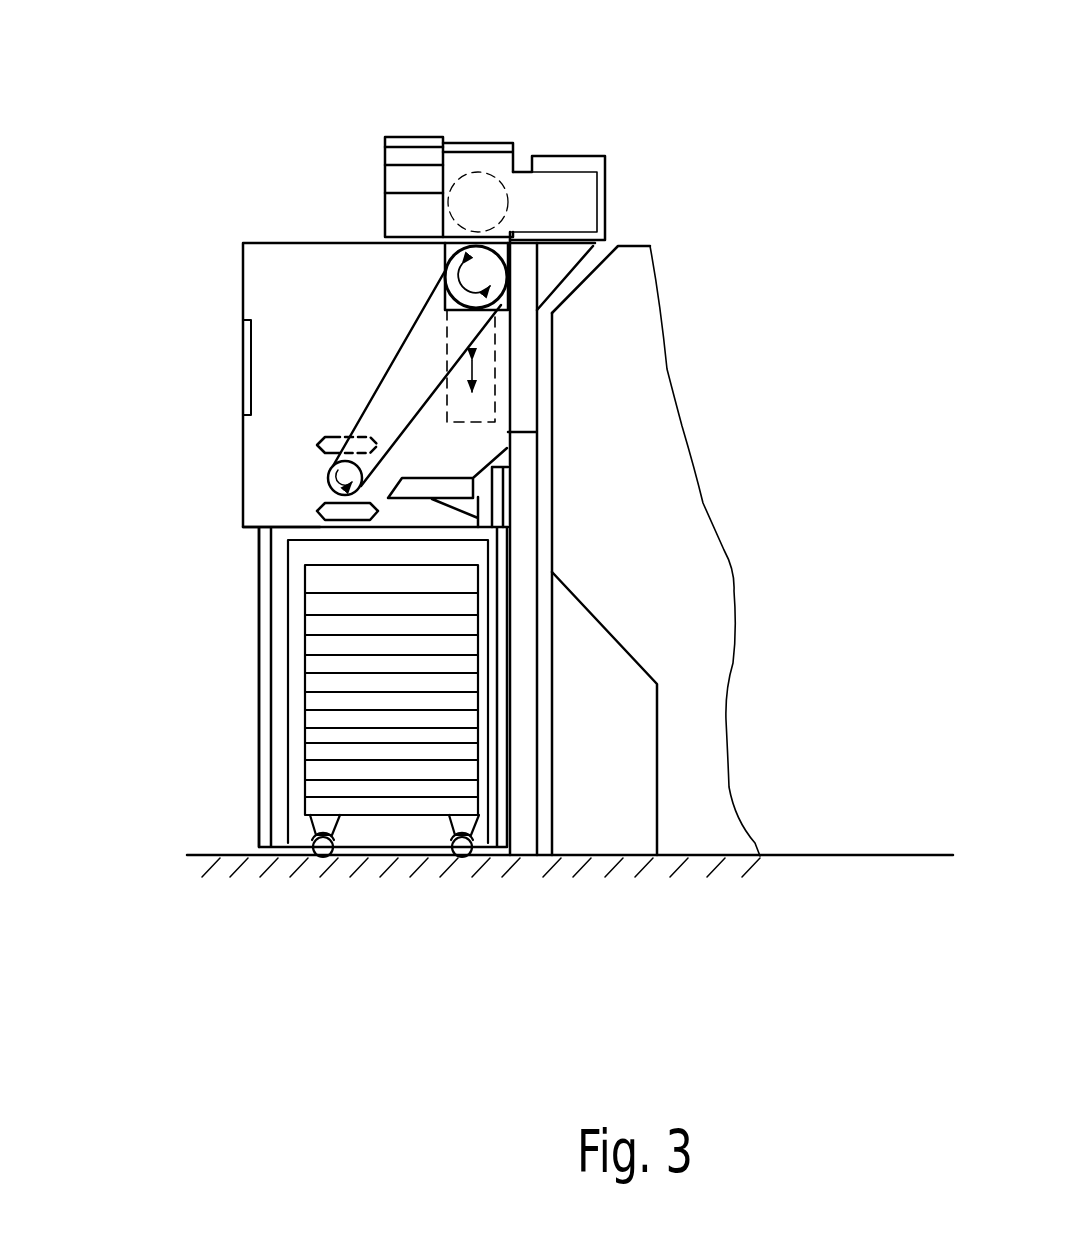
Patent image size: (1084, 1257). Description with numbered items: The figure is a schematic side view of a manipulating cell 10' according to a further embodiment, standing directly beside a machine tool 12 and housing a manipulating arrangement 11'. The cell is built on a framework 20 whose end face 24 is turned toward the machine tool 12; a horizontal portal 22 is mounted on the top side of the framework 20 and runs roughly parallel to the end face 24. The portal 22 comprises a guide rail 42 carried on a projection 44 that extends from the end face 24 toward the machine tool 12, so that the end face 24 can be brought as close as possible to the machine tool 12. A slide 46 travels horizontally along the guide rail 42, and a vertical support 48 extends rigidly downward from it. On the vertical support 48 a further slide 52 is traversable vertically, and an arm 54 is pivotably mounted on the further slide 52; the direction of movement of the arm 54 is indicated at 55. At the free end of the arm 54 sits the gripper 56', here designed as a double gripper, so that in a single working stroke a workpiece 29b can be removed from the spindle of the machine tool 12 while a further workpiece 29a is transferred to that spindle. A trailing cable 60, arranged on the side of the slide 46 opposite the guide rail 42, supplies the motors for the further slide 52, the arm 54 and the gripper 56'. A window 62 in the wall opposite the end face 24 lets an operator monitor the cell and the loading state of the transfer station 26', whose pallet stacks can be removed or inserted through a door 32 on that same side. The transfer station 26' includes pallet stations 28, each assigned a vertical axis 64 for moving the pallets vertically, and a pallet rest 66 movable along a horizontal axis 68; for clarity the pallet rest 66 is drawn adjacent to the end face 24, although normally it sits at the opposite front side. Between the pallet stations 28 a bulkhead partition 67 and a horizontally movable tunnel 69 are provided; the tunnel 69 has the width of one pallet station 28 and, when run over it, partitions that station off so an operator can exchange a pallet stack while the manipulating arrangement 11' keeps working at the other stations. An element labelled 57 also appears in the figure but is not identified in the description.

The manipulating cell 10' is at (244, 79).
The manipulating arrangement 11' is at (680, 69).
The machine tool 12 is at (662, 423).
The framework 20 is at (243, 490).
The horizontal portal 22 is at (583, 80).
The end face 24 is at (540, 640).
The transfer station 26' is at (318, 687).
The pallet station 28 is at (322, 702).
The further workpiece 29a is at (317, 445).
The workpiece 29b is at (317, 511).
The door 32 is at (260, 563).
The guide rail 42 is at (606, 164).
The projection 44 is at (573, 262).
The slide 46 is at (505, 160).
The vertical support 48 is at (485, 410).
The further slide 52 is at (440, 248).
The arm 54 is at (410, 358).
The direction of movement of the arm 55 is at (445, 280).
The gripper 56' is at (253, 460).
The pulley 57 is at (328, 480).
The trailing cable 60 is at (415, 138).
The window 62 is at (243, 342).
The vertical axis 64 is at (525, 743).
The pallet rest 66 is at (457, 488).
The bulkhead partition 67 is at (480, 788).
The horizontal axis 68 is at (500, 513).
The tunnel 69 is at (308, 527).